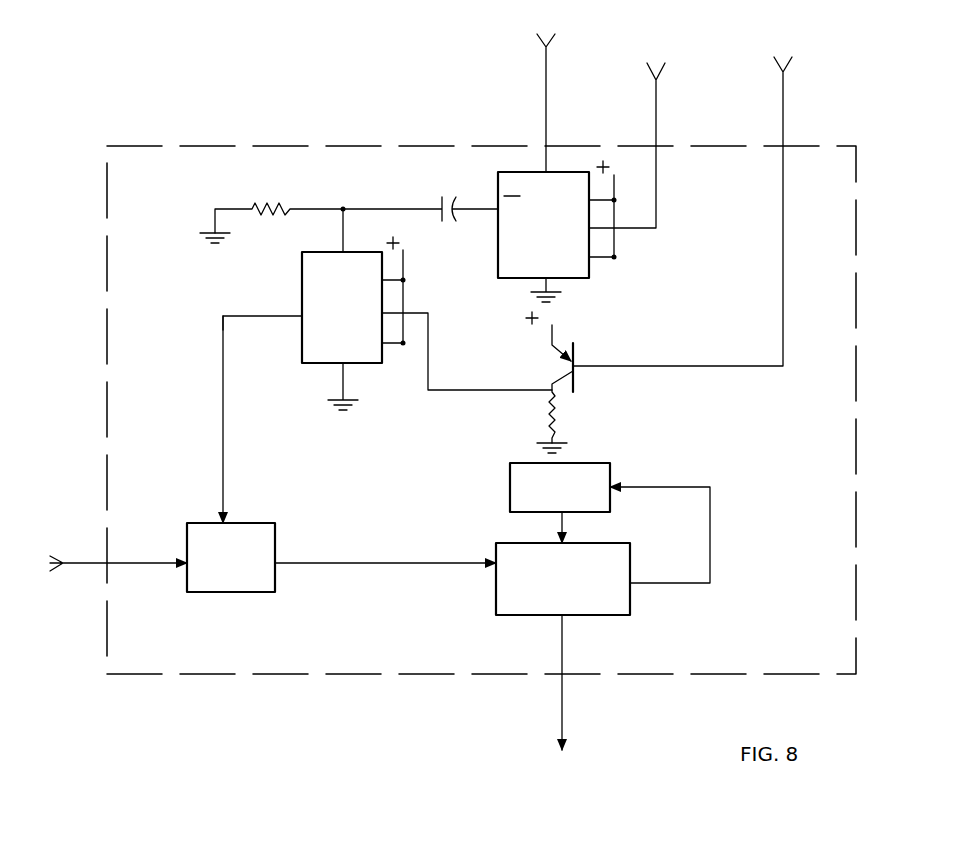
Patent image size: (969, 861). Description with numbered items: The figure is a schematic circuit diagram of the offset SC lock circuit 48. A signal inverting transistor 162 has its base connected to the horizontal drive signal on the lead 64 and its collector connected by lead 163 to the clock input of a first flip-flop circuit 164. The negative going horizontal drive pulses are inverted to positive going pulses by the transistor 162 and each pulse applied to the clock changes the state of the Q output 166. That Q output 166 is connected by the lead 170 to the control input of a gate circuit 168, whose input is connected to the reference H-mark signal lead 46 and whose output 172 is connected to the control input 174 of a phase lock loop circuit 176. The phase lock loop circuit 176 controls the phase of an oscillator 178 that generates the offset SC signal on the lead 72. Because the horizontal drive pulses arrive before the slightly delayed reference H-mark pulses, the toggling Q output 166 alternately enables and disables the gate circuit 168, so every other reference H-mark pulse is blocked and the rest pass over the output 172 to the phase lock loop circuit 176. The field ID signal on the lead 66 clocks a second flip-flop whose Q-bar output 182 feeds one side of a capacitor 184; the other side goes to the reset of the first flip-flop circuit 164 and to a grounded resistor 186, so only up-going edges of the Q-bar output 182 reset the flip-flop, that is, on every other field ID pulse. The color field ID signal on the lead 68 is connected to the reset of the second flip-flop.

The reference H-mark signal lead 46 is at (93, 565).
The offset SC lock circuit 48 is at (856, 322).
The horizontal drive signal lead 64 is at (782, 130).
The field ID signal lead 66 is at (655, 135).
The color field ID signal lead 68 is at (545, 122).
The offset SC signal lead 72 is at (565, 700).
The signal inverting transistor 162 is at (575, 361).
The lead 163 is at (440, 390).
The first flip-flop circuit 164 is at (302, 279).
The Q output 166 is at (300, 318).
The gate circuit 168 is at (245, 523).
The lead 170 is at (222, 418).
The output 172 is at (355, 560).
The control input 174 is at (493, 565).
The phase lock loop circuit 176 is at (610, 615).
The oscillator 178 is at (612, 473).
The Q-bar output 182 is at (498, 197).
The capacitor 184 is at (438, 204).
The grounded resistor 186 is at (258, 206).